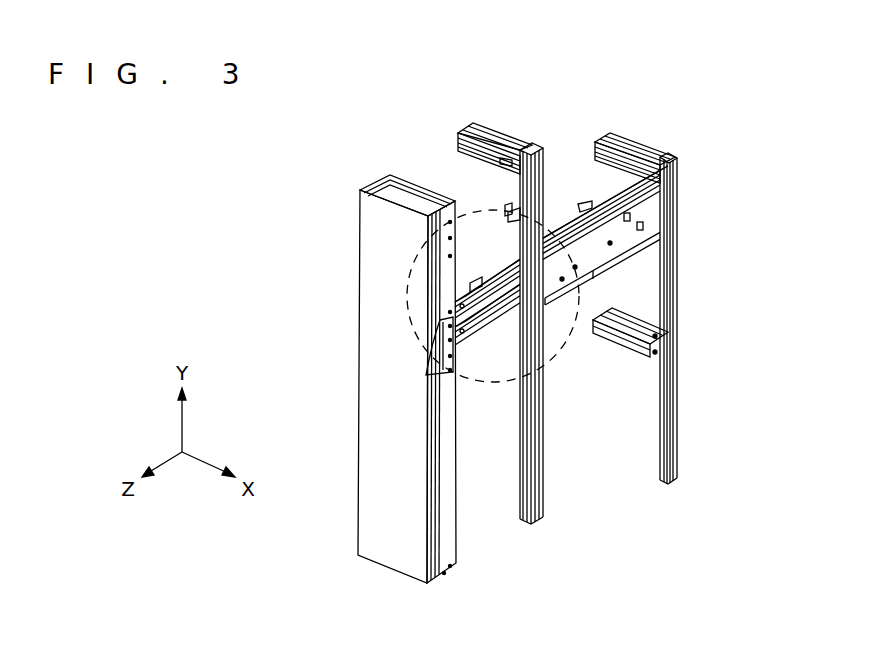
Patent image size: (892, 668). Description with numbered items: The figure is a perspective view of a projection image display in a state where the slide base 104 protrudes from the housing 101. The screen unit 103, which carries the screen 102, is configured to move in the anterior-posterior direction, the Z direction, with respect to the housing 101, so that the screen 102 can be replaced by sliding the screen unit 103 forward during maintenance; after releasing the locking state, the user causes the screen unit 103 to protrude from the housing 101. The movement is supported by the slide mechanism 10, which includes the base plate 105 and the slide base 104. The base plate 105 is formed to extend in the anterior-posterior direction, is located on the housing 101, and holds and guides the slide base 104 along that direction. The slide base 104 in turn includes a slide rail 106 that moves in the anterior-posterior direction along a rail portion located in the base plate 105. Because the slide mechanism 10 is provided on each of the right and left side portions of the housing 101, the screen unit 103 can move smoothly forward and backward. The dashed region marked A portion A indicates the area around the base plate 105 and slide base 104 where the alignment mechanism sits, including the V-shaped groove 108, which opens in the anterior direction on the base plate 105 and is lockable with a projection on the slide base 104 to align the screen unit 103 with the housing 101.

The slide mechanism 10 is at (568, 405).
The housing 101 is at (611, 133).
The screen 102 is at (385, 296).
The screen unit 103 is at (390, 175).
The slide base 104 is at (487, 340).
The base plate 105 is at (563, 292).
The slide rail 106 is at (441, 326).
The V-shaped groove 108 is at (512, 212).
The A portion A is at (580, 290).